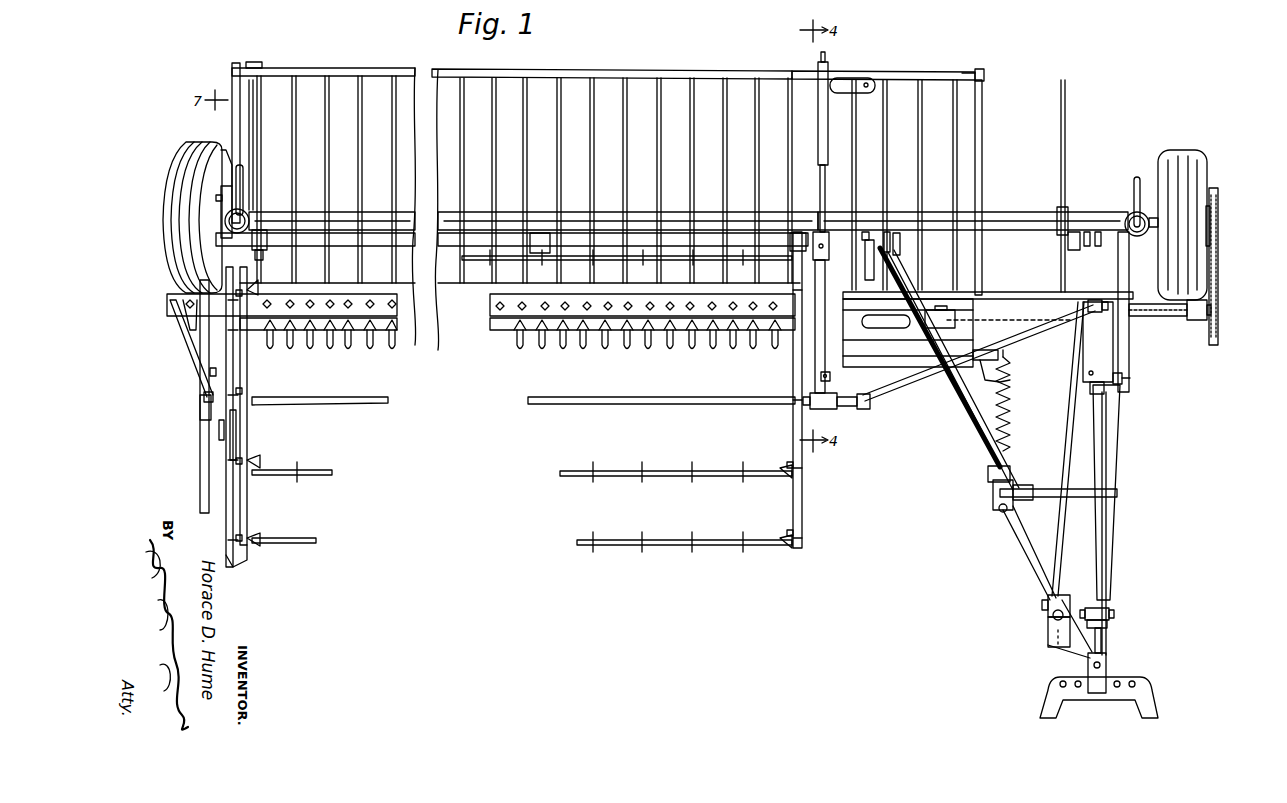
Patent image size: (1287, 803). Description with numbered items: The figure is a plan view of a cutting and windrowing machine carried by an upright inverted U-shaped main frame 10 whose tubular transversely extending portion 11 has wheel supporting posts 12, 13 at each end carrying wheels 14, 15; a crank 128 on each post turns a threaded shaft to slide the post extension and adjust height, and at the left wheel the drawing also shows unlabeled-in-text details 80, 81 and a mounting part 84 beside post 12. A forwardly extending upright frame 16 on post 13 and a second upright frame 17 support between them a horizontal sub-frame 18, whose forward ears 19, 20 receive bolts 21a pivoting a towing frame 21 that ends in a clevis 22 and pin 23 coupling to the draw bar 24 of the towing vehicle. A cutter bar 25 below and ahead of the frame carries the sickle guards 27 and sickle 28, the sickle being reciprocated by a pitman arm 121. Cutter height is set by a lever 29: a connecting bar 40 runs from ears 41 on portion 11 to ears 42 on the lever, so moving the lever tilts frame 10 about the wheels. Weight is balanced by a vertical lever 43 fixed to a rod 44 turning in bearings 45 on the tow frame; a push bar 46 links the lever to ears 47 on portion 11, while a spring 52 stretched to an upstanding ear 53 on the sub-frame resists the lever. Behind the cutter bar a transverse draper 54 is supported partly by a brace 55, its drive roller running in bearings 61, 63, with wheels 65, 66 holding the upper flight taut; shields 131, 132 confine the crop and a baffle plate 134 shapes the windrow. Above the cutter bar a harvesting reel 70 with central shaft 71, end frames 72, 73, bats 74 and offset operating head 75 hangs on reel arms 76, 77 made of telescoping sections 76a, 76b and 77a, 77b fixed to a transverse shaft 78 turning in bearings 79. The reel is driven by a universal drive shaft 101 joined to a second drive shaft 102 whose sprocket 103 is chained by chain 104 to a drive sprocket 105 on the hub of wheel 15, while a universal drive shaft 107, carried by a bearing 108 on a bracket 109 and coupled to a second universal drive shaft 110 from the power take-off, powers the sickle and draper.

The main frame 10 is at (600, 214).
The tubular transversely extending portion 11 is at (905, 212).
The wheel supporting post 12 is at (246, 212).
The wheel supporting post 13 is at (1126, 218).
The wheel 14 is at (160, 264).
The wheel 15 is at (1206, 172).
The forwardly extending upright frame 16 is at (1120, 268).
The second forwardly extending upright frame 17 is at (866, 332).
The horizontal sub-frame 18 is at (886, 360).
The ear 19 is at (952, 395).
The ear 20 is at (1122, 384).
The towing frame 21 is at (1122, 540).
The bolt 21a is at (1136, 376).
The clevis 22 is at (1108, 666).
The pin 23 is at (1112, 700).
The draw bar 24 is at (1040, 710).
The cutter bar 25 is at (634, 310).
The sickle guards 27 is at (732, 345).
The sickle 28 is at (680, 328).
The lever 29 is at (1046, 616).
The connecting bar 40 is at (1072, 422).
The ears 41 is at (1066, 240).
The ears 42 is at (1046, 604).
The vertical lever 43 is at (996, 505).
The rod 44 is at (1040, 488).
The bearings 45 is at (1028, 484).
The push bar 46 is at (978, 452).
The ears 47 is at (905, 244).
The spring 52 is at (1038, 412).
The upstanding ear 53 is at (1000, 336).
The transverse draper 54 is at (603, 100).
The supporting brace 55 is at (232, 84).
The bearing 61 is at (980, 72).
The bearing 63 is at (976, 294).
The wheel 65 is at (868, 90).
The wheel 66 is at (870, 278).
The harvesting reel 70 is at (640, 545).
The central shaft 71 is at (672, 403).
The end frame 72 is at (792, 443).
The end frame 73 is at (248, 440).
The reel bats 74 is at (466, 258).
The offset operating head 75 is at (228, 546).
The reel arm 76 is at (192, 350).
The telescoping section 76a is at (200, 400).
The telescoping section 76b is at (208, 373).
The reel arm 77 is at (816, 368).
The telescoping section 77a is at (830, 408).
The telescoping section 77b is at (830, 377).
The transverse shaft 78 is at (438, 246).
The bearings 79 is at (258, 255).
The wheel tread 80 is at (208, 205).
The wheel rim 81 is at (200, 180).
The wheel mount bracket 84 is at (225, 148).
The universal drive shaft 101 is at (872, 400).
The second drive shaft 102 is at (1146, 318).
The sprocket 103 is at (1220, 330).
The chain 104 is at (1218, 270).
The drive sprocket 105 is at (1222, 220).
The universal drive shaft 107 is at (1110, 568).
The bearing 108 is at (1112, 610).
The bracket 109 is at (1112, 624).
The second universal drive shaft 110 is at (1088, 664).
The pitman arm 121 is at (915, 328).
The crank 128 is at (246, 178).
The metal shield 131 is at (722, 70).
The metal shield 132 is at (935, 72).
The baffle plate 134 is at (1066, 106).